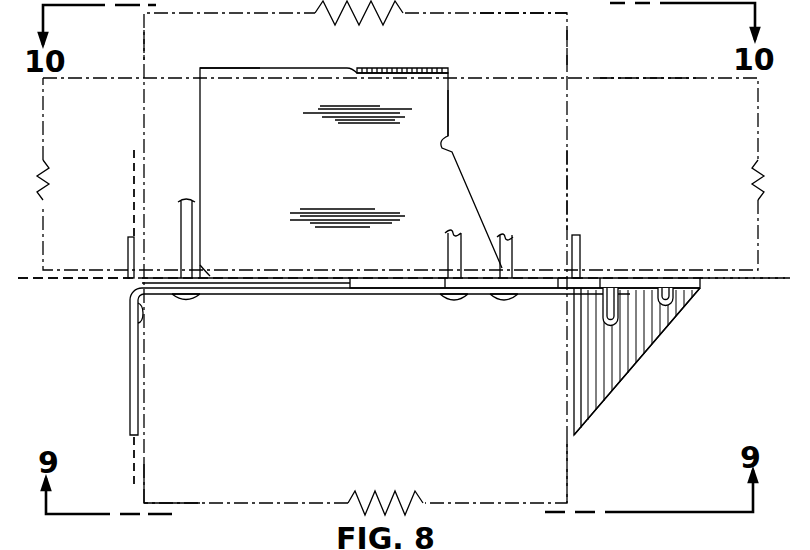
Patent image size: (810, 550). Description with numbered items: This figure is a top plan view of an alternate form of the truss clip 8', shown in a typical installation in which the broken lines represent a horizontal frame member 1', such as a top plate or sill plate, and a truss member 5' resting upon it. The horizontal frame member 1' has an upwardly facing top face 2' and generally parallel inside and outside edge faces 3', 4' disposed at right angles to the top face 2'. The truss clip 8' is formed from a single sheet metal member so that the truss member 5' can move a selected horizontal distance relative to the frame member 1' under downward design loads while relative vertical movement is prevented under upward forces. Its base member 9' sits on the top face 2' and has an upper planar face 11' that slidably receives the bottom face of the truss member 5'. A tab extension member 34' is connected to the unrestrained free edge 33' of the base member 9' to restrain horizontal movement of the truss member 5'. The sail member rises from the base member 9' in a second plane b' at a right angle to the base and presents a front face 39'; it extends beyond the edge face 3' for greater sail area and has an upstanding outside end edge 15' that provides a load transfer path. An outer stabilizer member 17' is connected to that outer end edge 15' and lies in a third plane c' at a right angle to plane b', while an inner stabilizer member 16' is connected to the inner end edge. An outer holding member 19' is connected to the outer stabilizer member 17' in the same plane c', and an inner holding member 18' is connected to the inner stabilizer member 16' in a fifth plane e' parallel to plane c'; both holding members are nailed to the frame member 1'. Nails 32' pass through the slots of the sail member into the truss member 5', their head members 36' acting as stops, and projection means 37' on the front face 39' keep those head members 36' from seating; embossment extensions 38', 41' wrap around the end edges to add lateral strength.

The horizontal frame member 1' is at (136, 482).
The top face 2' is at (523, 31).
The inside edge face 3' is at (600, 50).
The outside edge face 4' is at (112, 51).
The truss member 5' is at (659, 47).
The truss clip 8' is at (642, 361).
The base member 9' is at (460, 111).
The upper planar face 11' is at (351, 173).
The outside end edge 15' is at (400, 305).
The inner stabilizer member 16' is at (637, 361).
The outer stabilizer member 17' is at (111, 367).
The inner holding member 18' is at (604, 250).
The outer holding member 19' is at (105, 254).
The nails 32' is at (367, 238).
The unrestrained free edge 33' is at (230, 88).
The tab extension member 34' is at (402, 53).
The head members 36' is at (345, 312).
The projection means 37' is at (246, 298).
The embossment extension 38' is at (611, 291).
The front face 39' is at (524, 309).
The embossment extension 41' is at (172, 315).
The second plane b' is at (404, 313).
The third plane c' is at (107, 318).
The fifth plane e' is at (603, 326).